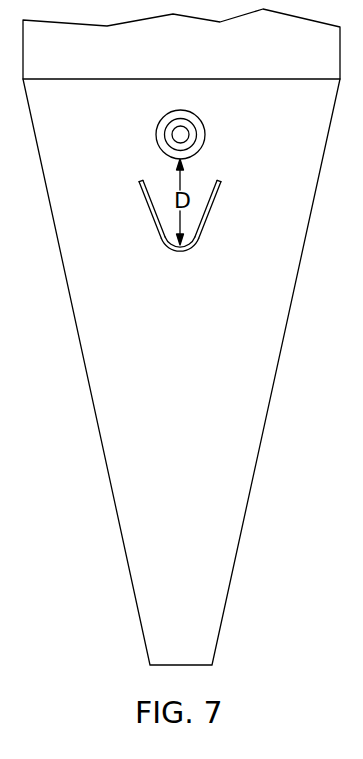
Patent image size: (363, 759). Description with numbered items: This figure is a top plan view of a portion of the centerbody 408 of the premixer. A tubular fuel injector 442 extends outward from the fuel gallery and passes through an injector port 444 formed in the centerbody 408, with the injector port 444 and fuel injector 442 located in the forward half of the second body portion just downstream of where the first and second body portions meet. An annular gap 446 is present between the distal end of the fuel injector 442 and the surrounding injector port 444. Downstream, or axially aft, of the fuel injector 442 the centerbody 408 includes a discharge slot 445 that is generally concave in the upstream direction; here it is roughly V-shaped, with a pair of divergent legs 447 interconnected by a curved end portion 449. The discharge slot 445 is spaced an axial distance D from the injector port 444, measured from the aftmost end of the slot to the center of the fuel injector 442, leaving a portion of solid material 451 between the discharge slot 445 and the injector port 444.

The centerbody 408 is at (262, 376).
The tubular fuel injector 442 is at (175, 124).
The injector port 444 is at (196, 116).
The annular gap 446 is at (214, 140).
The discharge slot 445 is at (180, 234).
The divergent legs 447 is at (154, 222).
The curved end portion 449 is at (188, 250).
The portion of solid material 451 is at (147, 172).